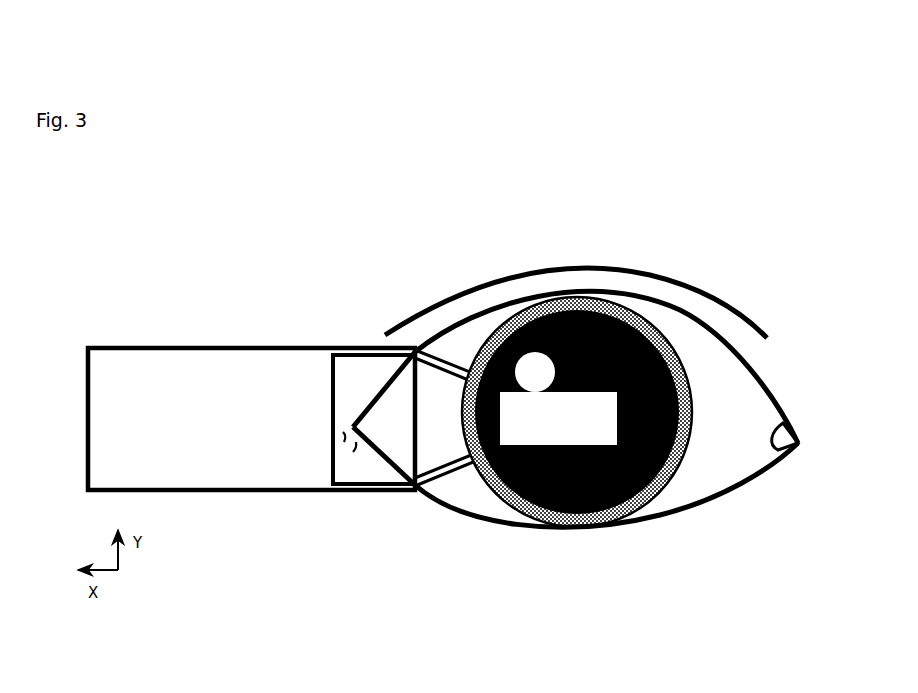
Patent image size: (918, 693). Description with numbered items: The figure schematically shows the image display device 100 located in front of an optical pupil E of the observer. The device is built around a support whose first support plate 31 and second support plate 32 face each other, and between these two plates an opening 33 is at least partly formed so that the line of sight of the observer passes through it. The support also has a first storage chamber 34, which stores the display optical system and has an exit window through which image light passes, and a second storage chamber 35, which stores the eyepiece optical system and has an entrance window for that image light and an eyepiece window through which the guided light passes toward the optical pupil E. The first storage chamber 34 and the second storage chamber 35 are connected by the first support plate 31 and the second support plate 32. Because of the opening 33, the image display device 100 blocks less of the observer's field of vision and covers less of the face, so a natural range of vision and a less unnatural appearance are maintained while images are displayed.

The image display device 100 is at (291, 437).
The first support plate 31 is at (349, 344).
The second support plate 32 is at (349, 497).
The opening 33 is at (392, 440).
The first storage chamber 34 is at (197, 344).
The second storage chamber 35 is at (584, 428).
The optical pupil E is at (591, 429).